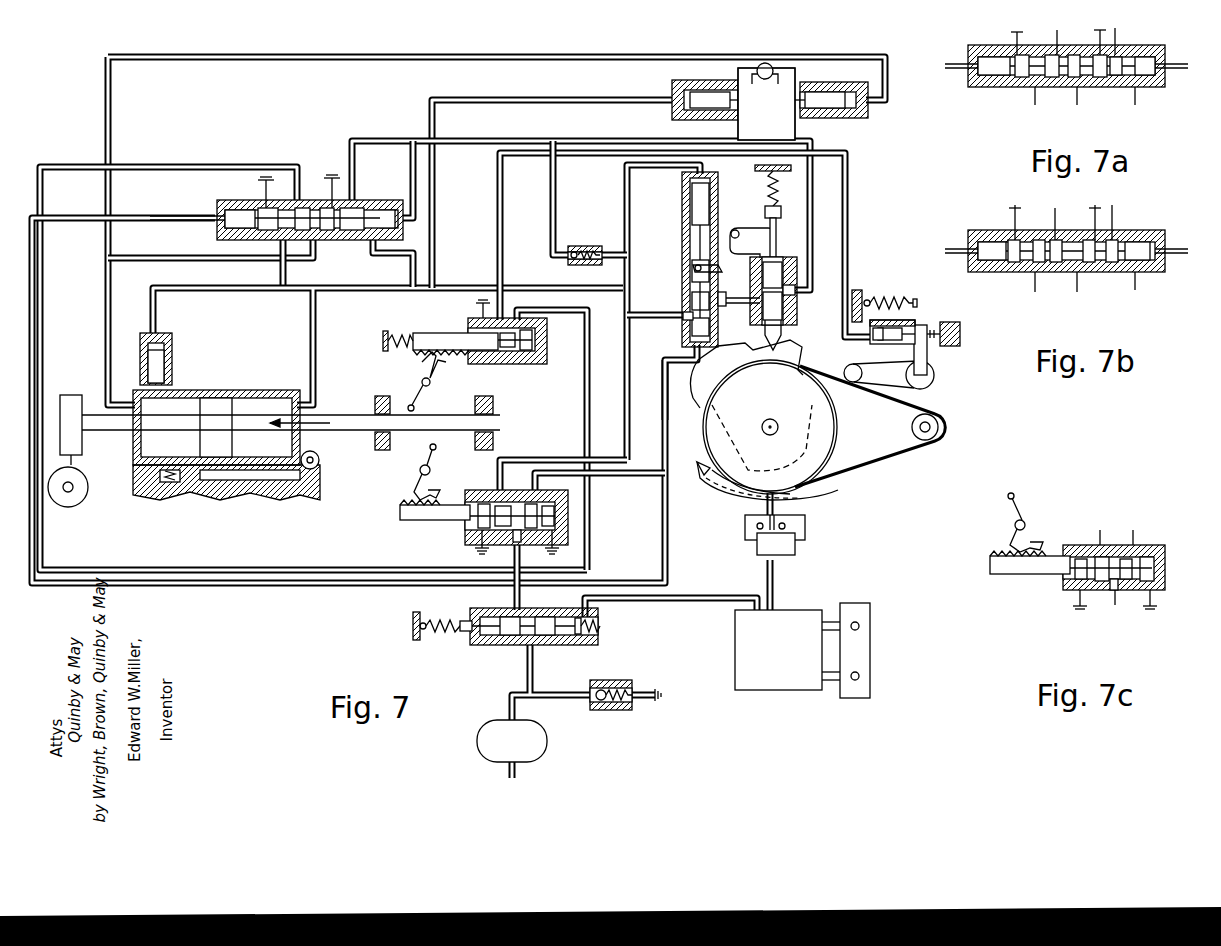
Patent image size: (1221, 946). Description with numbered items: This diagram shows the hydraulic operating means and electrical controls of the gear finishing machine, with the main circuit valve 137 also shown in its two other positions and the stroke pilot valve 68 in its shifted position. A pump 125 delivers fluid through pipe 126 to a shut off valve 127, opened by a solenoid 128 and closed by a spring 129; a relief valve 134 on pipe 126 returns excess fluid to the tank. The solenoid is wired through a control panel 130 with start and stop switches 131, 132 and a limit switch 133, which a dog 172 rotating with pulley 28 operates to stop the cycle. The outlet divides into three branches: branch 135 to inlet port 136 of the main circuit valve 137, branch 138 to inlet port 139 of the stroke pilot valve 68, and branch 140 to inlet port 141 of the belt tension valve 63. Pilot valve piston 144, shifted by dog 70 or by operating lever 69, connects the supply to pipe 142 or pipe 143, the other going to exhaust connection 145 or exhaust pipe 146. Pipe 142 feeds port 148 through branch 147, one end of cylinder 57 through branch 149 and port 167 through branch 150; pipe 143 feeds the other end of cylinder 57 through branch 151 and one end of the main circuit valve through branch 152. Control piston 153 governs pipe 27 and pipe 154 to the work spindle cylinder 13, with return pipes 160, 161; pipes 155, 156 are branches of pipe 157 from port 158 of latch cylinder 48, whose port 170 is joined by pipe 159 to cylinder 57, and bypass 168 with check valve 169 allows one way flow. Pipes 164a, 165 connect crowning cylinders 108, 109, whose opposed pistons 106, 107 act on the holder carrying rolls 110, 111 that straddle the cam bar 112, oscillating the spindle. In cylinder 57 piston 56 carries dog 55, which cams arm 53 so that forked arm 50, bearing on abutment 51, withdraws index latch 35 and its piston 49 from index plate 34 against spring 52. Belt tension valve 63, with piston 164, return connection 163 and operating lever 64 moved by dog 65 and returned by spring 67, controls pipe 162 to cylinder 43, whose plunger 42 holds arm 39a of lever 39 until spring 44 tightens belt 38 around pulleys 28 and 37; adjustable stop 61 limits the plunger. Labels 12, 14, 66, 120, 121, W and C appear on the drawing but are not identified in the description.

In FIG. 7, the rod 12 is at (347, 420).
In FIG. 7, the work spindle cylinder 13 is at (265, 391).
In FIG. 7, the piston 14 is at (230, 430).
In FIG. 7, the pipe 27 is at (281, 271).
In FIG. 7A, the pipe 27 is at (1035, 104).
In FIG. 7B, the pipe 27 is at (1036, 292).
In FIG. 7, the pulley 28 is at (838, 412).
In FIG. 7, the notched ring 34 is at (715, 368).
In FIG. 7, the latch 35 is at (746, 374).
In FIG. 7, the pulley 37 is at (916, 434).
In FIG. 7, the belt 38 is at (890, 455).
In FIG. 7, the lever 39 is at (893, 380).
In FIG. 7, the arm of lever 39a is at (930, 352).
In FIG. 7, the plunger 42 is at (900, 340).
In FIG. 7, the hydraulic cylinder 43 is at (874, 340).
In FIG. 7, the spring 44 is at (889, 302).
In FIG. 7, the cylinder 48 is at (790, 270).
In FIG. 7, the piston 49 is at (784, 326).
In FIG. 7, the forked arm 50 is at (777, 236).
In FIG. 7, the adjustable abutment 51 is at (781, 204).
In FIG. 7, the spring 52 is at (767, 186).
In FIG. 7, the arm 53 is at (752, 243).
In FIG. 7, the dog 55 is at (722, 271).
In FIG. 7, the piston 56 is at (692, 222).
In FIG. 7, the hydraulic cylinder 57 is at (683, 246).
In FIG. 7, the adjustable stop 61 is at (960, 327).
In FIG. 7, the belt tension valve 63 is at (548, 359).
In FIG. 7, the operating lever 64 is at (432, 380).
In FIG. 7, the dog 65 is at (380, 396).
In FIG. 7, the guide 66 is at (398, 428).
In FIG. 7, the spring 67 is at (398, 352).
In FIG. 7, the stroke pilot valve 68 is at (476, 490).
In FIG. 7C, the stroke pilot valve 68 is at (1068, 546).
In FIG. 7, the operating lever 69 is at (433, 452).
In FIG. 7C, the operating lever 69 is at (1025, 520).
In FIG. 7, the dog 70 is at (494, 406).
In FIG. 7, the piston 106 is at (716, 90).
In FIG. 7, the piston 107 is at (858, 92).
In FIG. 7, the hydraulic cylinder 108 is at (682, 84).
In FIG. 7, the hydraulic cylinder 109 is at (840, 90).
In FIG. 7, the antifriction roll 110 is at (748, 68).
In FIG. 7, the antifriction roll 111 is at (786, 72).
In FIG. 7, the bar 112 is at (766, 62).
In FIG. 7, the plunger 120 is at (165, 363).
In FIG. 7, the housing 121 is at (172, 338).
In FIG. 7, the pump 125 is at (540, 740).
In FIG. 7, the pipe 126 is at (528, 680).
In FIG. 7, the shut off valve 127 is at (495, 645).
In FIG. 7, the solenoid 128 is at (600, 626).
In FIG. 7, the spring 129 is at (440, 620).
In FIG. 7, the control panel 130 is at (770, 685).
In FIG. 7, the start switch 131 is at (860, 624).
In FIG. 7, the stop switch 132 is at (860, 677).
In FIG. 7, the limit switch 133 is at (750, 540).
In FIG. 7, the relief valve 134 is at (612, 686).
In FIG. 7, the branch 135 is at (296, 170).
In FIG. 7A, the branch 135 is at (1059, 32).
In FIG. 7B, the branch 135 is at (1060, 215).
In FIG. 7, the inlet port 136 is at (320, 206).
In FIG. 7A, the inlet port 136 is at (1074, 55).
In FIG. 7B, the inlet port 136 is at (1072, 242).
In FIG. 7, the main circuit valve 137 is at (214, 235).
In FIG. 7A, the main circuit valve 137 is at (1000, 87).
In FIG. 7B, the main circuit valve 137 is at (1003, 272).
In FIG. 7, the branch 138 is at (522, 548).
In FIG. 7C, the branch 138 is at (1117, 605).
In FIG. 7, the inlet port 139 is at (501, 572).
In FIG. 7C, the inlet port 139 is at (1100, 595).
In FIG. 7, the branch 140 is at (588, 320).
In FIG. 7, the inlet port 141 is at (540, 322).
In FIG. 7, the pipe 142 is at (548, 459).
In FIG. 7C, the pipe 142 is at (1110, 525).
In FIG. 7, the pipe 143 is at (618, 476).
In FIG. 7C, the pipe 143 is at (1136, 540).
In FIG. 7, the piston 144 is at (432, 520).
In FIG. 7C, the piston 144 is at (1020, 572).
In FIG. 7, the exhaust connection 145 is at (567, 551).
In FIG. 7C, the exhaust connection 145 is at (1168, 611).
In FIG. 7, the exhaust pipe 146 is at (470, 551).
In FIG. 7C, the exhaust pipe 146 is at (1062, 611).
In FIG. 7, the branch 147 is at (534, 286).
In FIG. 7A, the branch 147 is at (1138, 100).
In FIG. 7B, the branch 147 is at (1138, 288).
In FIG. 7, the port 148 is at (371, 241).
In FIG. 7A, the port 148 is at (1130, 87).
In FIG. 7B, the port 148 is at (1132, 273).
In FIG. 7, the branch 149 is at (629, 200).
In FIG. 7, the branch 150 is at (646, 318).
In FIG. 7, the branch 151 is at (666, 418).
In FIG. 7, the branch 152 is at (191, 217).
In FIG. 7A, the branch 152 is at (948, 70).
In FIG. 7B, the branch 152 is at (952, 256).
In FIG. 7, the control piston 153 is at (238, 210).
In FIG. 7A, the control piston 153 is at (1000, 58).
In FIG. 7B, the control piston 153 is at (995, 243).
In FIG. 7, the pipe 154 is at (172, 259).
In FIG. 7A, the pipe 154 is at (1078, 106).
In FIG. 7B, the pipe 154 is at (1078, 292).
In FIG. 7, the pipe 155 is at (396, 209).
In FIG. 7A, the pipe 155 is at (1180, 62).
In FIG. 7B, the pipe 155 is at (1175, 248).
In FIG. 7, the pipe 156 is at (353, 185).
In FIG. 7A, the pipe 156 is at (1118, 32).
In FIG. 7B, the pipe 156 is at (1114, 210).
In FIG. 7, the pipe 157 is at (646, 139).
In FIG. 7, the port 158 is at (797, 292).
In FIG. 7, the pipe 159 is at (733, 309).
In FIG. 7, the return pipe 160 is at (278, 203).
In FIG. 7A, the return pipe 160 is at (1019, 31).
In FIG. 7B, the return pipe 160 is at (1018, 207).
In FIG. 7, the return pipe 161 is at (333, 181).
In FIG. 7A, the return pipe 161 is at (1105, 40).
In FIG. 7B, the return pipe 161 is at (1095, 219).
In FIG. 7, the pipe 162 is at (502, 213).
In FIG. 7, the return connection 163 is at (468, 304).
In FIG. 7, the piston 164 is at (428, 333).
In FIG. 7, the pipe 164a is at (365, 55).
In FIG. 7, the pipe 165 is at (618, 99).
In FIG. 7, the port 167 is at (684, 314).
In FIG. 7, the bypass 168 is at (551, 180).
In FIG. 7, the check valve 169 is at (580, 248).
In FIG. 7, the port 170 is at (739, 290).
In FIG. 7, the dog 172 is at (706, 478).
In FIG. 7, the workpiece W is at (72, 394).
In FIG. 7, the cutter C is at (80, 464).